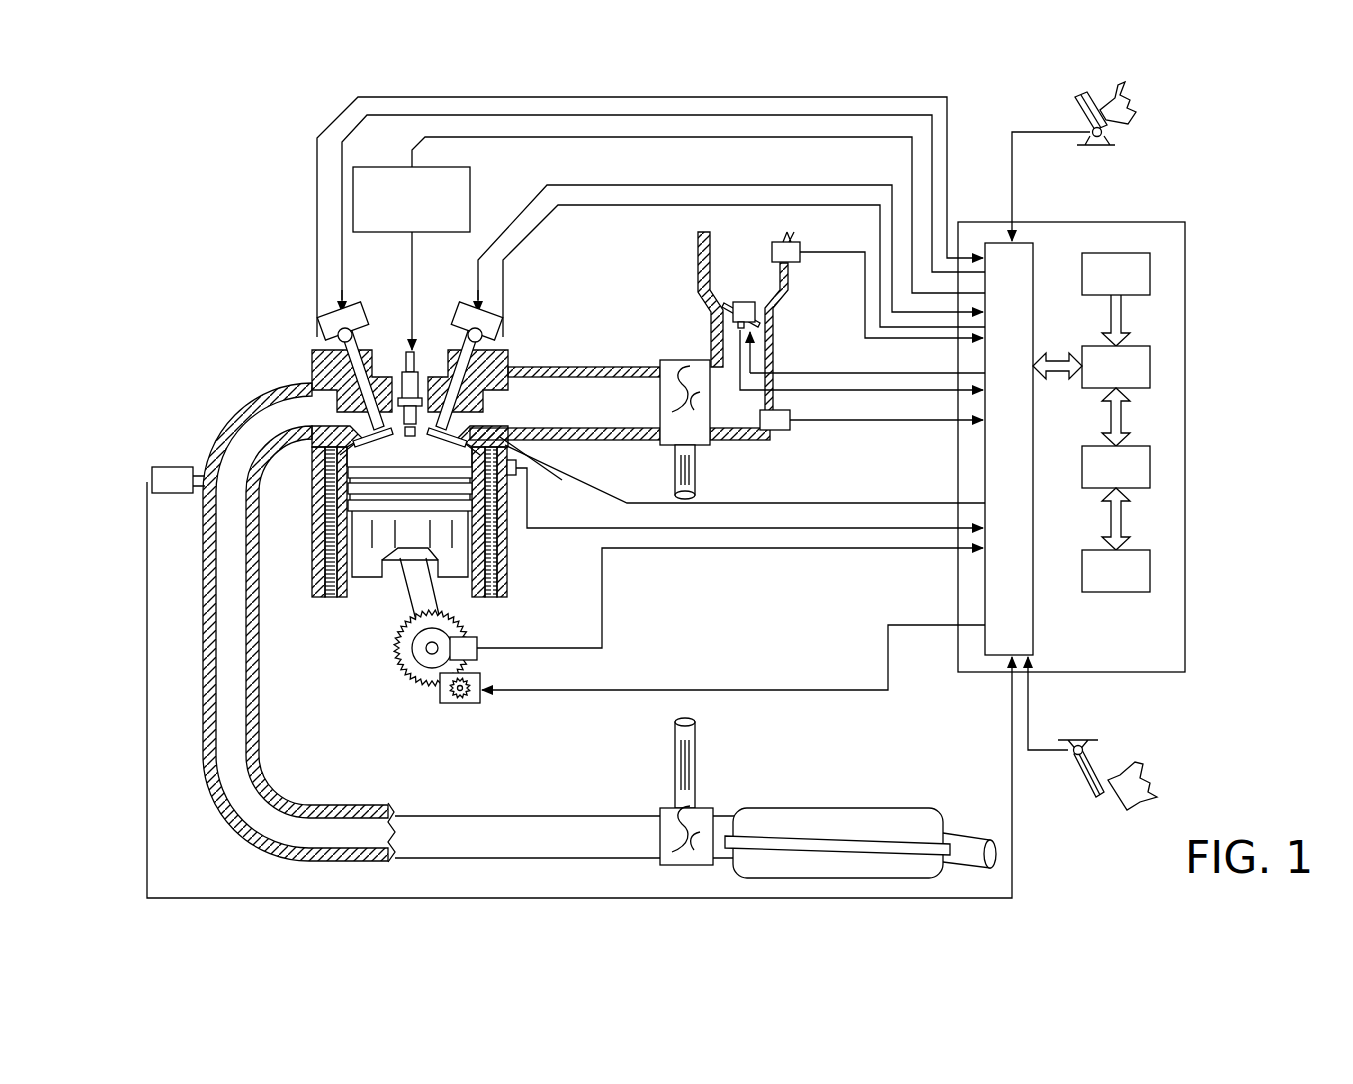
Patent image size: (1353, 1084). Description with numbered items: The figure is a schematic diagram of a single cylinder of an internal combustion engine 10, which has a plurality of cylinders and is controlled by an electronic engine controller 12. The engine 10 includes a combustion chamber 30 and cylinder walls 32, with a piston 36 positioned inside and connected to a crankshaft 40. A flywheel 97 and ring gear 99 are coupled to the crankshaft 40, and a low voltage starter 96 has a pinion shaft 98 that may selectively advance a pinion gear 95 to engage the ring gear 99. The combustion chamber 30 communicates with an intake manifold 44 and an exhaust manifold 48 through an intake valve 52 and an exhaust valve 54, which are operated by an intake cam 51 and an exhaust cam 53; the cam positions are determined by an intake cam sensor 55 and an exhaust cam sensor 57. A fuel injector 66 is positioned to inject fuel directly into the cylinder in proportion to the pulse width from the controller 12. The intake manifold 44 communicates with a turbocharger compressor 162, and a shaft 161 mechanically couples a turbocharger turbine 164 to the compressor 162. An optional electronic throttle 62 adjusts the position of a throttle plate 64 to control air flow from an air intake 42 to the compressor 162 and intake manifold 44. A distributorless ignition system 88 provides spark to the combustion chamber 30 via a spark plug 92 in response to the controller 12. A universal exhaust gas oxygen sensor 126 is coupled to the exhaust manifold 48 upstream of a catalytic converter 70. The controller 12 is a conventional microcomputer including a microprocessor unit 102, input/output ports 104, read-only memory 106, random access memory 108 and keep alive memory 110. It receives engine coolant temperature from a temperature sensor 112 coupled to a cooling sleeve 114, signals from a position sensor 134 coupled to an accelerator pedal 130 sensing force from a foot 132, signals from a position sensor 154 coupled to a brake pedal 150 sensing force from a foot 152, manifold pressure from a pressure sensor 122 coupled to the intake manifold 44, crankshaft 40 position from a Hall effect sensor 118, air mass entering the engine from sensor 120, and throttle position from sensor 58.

The internal combustion engine 10 is at (245, 302).
The electronic engine controller 12 is at (1180, 222).
The combustion chamber 30 is at (320, 556).
The cylinder walls 32 is at (350, 600).
The piston 36 is at (392, 590).
The crankshaft 40 is at (416, 672).
The air intake 42 is at (754, 278).
The intake manifold 44 is at (600, 415).
The exhaust manifold 48 is at (292, 421).
The intake cam 51 is at (468, 308).
The intake valve 52 is at (462, 418).
The exhaust cam 53 is at (352, 308).
The exhaust valve 54 is at (345, 405).
The intake cam sensor 55 is at (484, 330).
The exhaust cam sensor 57 is at (332, 332).
The throttle position sensor 58 is at (735, 322).
The electronic throttle 62 is at (760, 304).
The throttle plate 64 is at (733, 308).
The fuel injector 66 is at (545, 469).
The catalytic converter 70 is at (772, 808).
The distributorless ignition system 88 is at (367, 167).
The spark plug 92 is at (414, 352).
The pinion gear 95 is at (476, 703).
The starter 96 is at (479, 704).
The flywheel 97 is at (404, 645).
The pinion shaft 98 is at (462, 698).
The ring gear 99 is at (435, 680).
The microprocessor unit 102 is at (1152, 370).
The input/output ports 104 is at (1035, 252).
The read-only memory 106 is at (1152, 272).
The random access memory 108 is at (1152, 466).
The keep alive memory 110 is at (1152, 570).
The temperature sensor 112 is at (516, 474).
The cooling sleeve 114 is at (505, 552).
The Hall effect sensor 118 is at (478, 636).
The air mass sensor 120 is at (797, 243).
The pressure sensor 122 is at (788, 431).
The Universal Exhaust Gas Oxygen sensor 126 is at (155, 472).
The accelerator pedal 130 is at (1073, 108).
The foot 132 is at (1128, 96).
The position sensor 134 is at (1112, 132).
The brake pedal 150 is at (1100, 797).
The foot 152 is at (1140, 765).
The position sensor 154 is at (1064, 748).
The shaft 161 is at (676, 462).
The turbocharger compressor 162 is at (660, 368).
The turbocharger turbine 164 is at (665, 808).